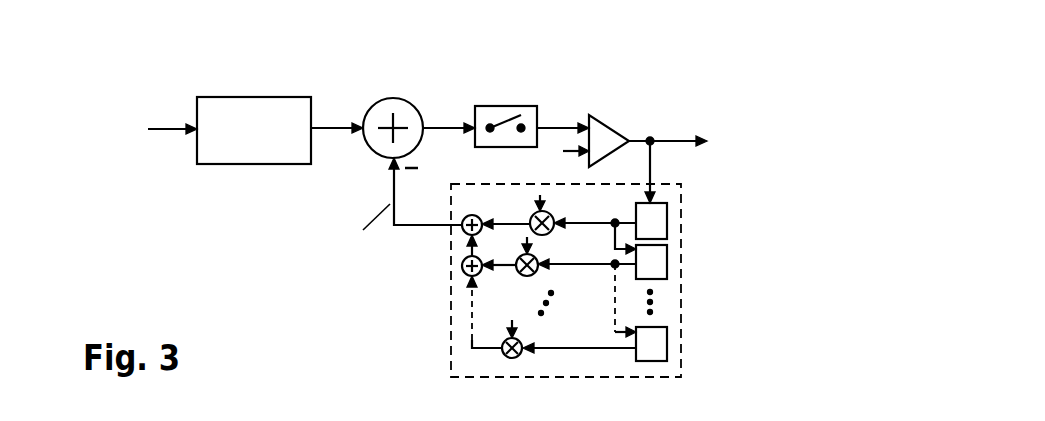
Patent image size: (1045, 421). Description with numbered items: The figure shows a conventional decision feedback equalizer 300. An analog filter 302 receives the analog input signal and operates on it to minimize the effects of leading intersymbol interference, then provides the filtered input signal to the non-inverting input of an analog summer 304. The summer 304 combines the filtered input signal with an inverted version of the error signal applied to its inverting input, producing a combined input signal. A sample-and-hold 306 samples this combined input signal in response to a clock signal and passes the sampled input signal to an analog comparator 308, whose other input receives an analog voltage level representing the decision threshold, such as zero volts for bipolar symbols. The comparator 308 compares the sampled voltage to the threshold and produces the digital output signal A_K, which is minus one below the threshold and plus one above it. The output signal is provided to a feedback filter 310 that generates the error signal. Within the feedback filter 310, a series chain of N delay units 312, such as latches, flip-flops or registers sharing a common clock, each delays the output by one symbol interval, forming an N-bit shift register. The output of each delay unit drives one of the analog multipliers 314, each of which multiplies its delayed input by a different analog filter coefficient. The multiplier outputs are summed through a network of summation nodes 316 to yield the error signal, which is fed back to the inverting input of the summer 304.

The decision feedback equalizer 300 is at (480, 44).
The analog filter 302 is at (250, 165).
The analog summer 304 is at (377, 154).
The sample-and-hold 306 is at (510, 148).
The analog comparator 308 is at (600, 121).
The feedback filter 310 is at (451, 352).
The delay units 312 is at (667, 218).
The analog multipliers 314 is at (551, 234).
The summation nodes 316 is at (462, 231).